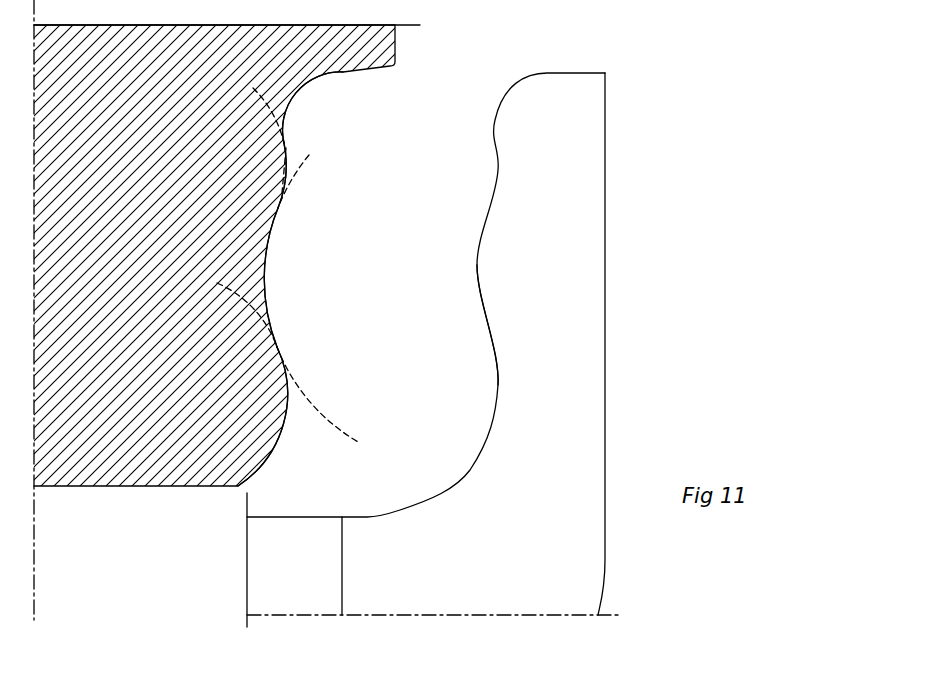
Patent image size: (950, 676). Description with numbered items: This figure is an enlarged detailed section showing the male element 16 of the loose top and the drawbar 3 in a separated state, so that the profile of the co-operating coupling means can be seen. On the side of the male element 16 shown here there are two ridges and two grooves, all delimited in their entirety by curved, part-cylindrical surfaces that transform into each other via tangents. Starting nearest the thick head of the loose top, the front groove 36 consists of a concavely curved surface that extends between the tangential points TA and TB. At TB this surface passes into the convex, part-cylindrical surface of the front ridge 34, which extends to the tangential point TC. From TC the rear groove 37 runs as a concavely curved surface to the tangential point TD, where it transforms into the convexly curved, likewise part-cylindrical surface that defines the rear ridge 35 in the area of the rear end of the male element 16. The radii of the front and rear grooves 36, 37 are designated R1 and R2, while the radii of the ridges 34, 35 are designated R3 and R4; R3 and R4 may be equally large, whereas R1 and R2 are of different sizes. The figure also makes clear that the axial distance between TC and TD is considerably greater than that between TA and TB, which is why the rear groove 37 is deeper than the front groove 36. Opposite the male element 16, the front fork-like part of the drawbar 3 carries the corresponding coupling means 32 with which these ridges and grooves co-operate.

The drawbar 3 is at (600, 229).
The male element 16 is at (100, 487).
The coupling means 32 is at (452, 315).
The front ridge 34 is at (292, 163).
The rear ridge 35 is at (285, 412).
The front groove 36 is at (300, 88).
The rear groove 37 is at (265, 273).
The radius of the front groove R1 is at (300, 111).
The radius of the rear groove R2 is at (468, 278).
The radius of the front ridge R3 is at (272, 190).
The radius of the rear ridge R4 is at (172, 373).
The tangential point TA is at (355, 72).
The tangential point TB is at (295, 143).
The tangential point TC is at (278, 198).
The tangential point TD is at (288, 347).